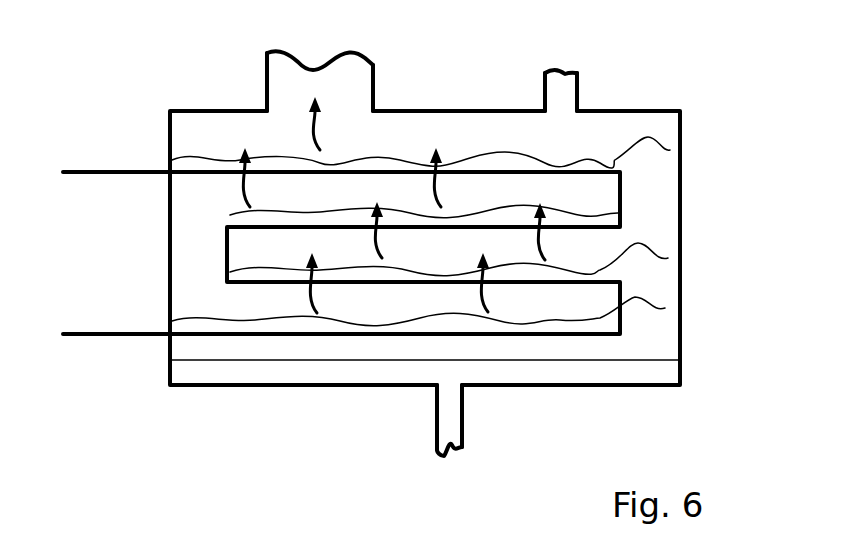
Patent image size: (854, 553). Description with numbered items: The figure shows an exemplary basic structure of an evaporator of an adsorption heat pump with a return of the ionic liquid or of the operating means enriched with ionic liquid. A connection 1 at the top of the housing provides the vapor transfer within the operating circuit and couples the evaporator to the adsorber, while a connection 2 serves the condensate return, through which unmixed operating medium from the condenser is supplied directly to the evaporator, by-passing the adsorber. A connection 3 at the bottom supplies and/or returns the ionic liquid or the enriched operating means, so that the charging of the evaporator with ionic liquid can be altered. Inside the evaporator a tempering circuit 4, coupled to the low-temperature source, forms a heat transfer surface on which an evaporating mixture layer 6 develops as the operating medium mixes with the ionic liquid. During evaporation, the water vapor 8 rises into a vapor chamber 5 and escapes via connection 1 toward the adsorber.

The connection 1 is at (375, 87).
The connection 2 is at (567, 87).
The connection 3 is at (450, 423).
The tempering circuit 4 is at (98, 175).
The vapor chamber 5 is at (202, 128).
The evaporating mixture layer 6 is at (670, 150).
The water vapor 8 is at (242, 198).